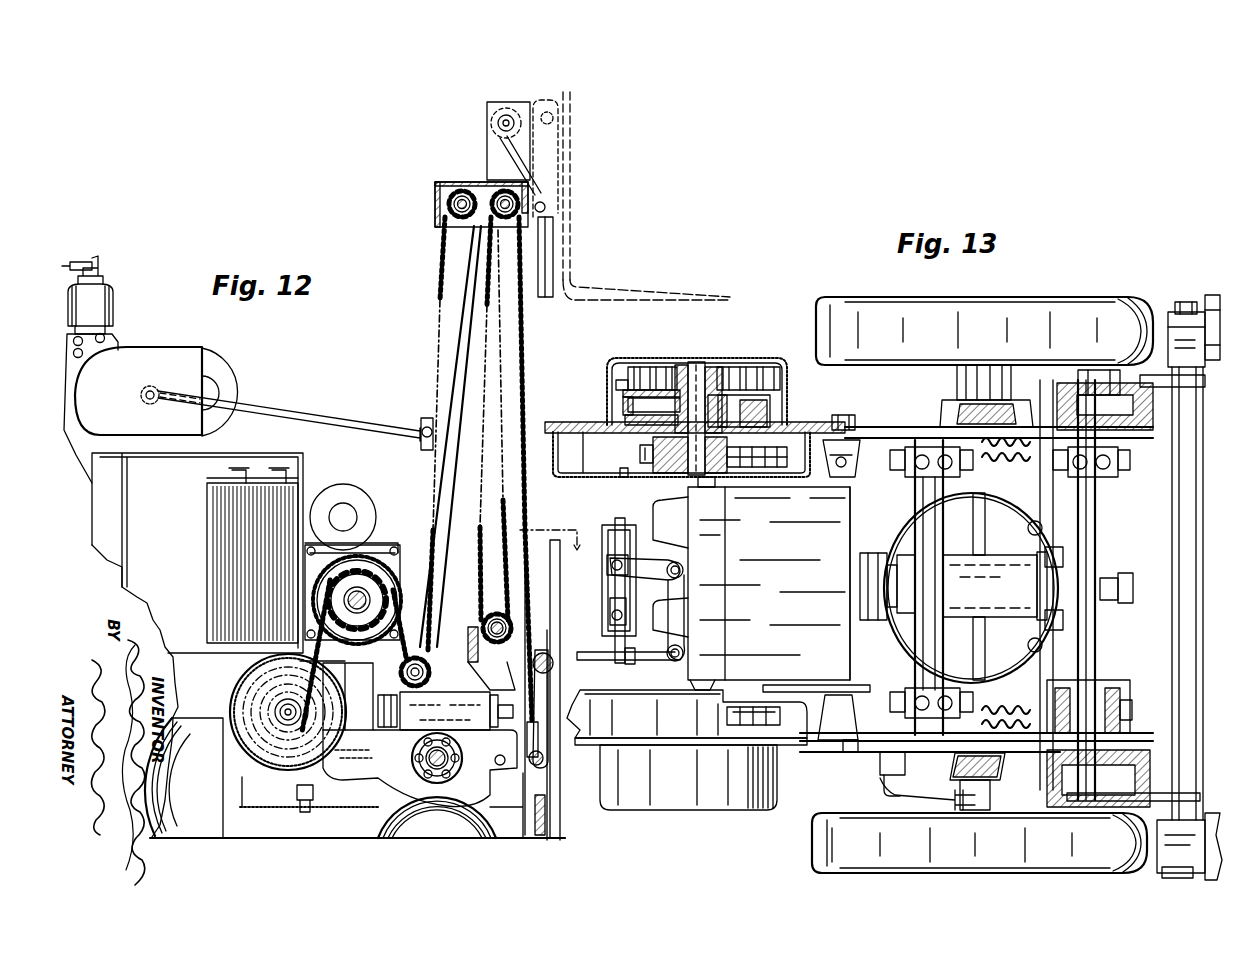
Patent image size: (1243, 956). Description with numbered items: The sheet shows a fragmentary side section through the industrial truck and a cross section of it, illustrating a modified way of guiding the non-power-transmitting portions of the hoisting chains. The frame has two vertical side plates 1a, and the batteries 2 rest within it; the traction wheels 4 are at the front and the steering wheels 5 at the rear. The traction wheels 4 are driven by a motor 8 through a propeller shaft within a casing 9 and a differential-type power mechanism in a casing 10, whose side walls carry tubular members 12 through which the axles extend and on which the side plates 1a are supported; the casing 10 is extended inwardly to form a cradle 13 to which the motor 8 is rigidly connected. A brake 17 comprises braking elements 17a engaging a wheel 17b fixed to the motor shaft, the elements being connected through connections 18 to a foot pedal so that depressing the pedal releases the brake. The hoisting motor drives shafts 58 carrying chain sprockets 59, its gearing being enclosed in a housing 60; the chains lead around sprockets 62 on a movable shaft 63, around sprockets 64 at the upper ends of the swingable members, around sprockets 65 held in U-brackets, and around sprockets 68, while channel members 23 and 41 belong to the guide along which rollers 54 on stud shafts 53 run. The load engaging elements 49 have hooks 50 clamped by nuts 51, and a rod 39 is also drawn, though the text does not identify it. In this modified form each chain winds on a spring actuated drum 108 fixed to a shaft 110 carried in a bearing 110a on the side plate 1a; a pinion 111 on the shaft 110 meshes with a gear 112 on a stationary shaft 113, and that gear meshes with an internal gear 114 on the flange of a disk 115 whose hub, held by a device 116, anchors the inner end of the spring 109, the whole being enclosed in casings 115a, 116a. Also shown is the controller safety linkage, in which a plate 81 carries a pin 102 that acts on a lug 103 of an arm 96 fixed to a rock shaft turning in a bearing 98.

In FIG. 13, the side plates 1a is at (872, 432).
In FIG. 12, the batteries 2 is at (209, 627).
In FIG. 12, the traction wheels 4 is at (380, 826).
In FIG. 13, the traction wheels 4 is at (888, 300).
In FIG. 12, the steering wheels 5 is at (191, 820).
In FIG. 13, the motor 8 is at (761, 589).
In FIG. 13, the casing 9 is at (996, 588).
In FIG. 13, the casing 10 is at (971, 588).
In FIG. 13, the tubular members 12 is at (957, 376).
In FIG. 12, the cradle 13 is at (258, 712).
In FIG. 13, the cradle 13 is at (551, 548).
In FIG. 13, the brake 17 is at (626, 521).
In FIG. 13, the braking elements 17a is at (608, 613).
In FIG. 13, the wheel 17b is at (607, 586).
In FIG. 13, the connections 18 is at (614, 665).
In FIG. 13, the channel members 23 is at (1120, 456).
In FIG. 12, the tilt rod 39 is at (312, 410).
In FIG. 13, the channel members 41 is at (1125, 471).
In FIG. 13, the load engaging elements 49 is at (1212, 299).
In FIG. 13, the hook 50 is at (1168, 319).
In FIG. 13, the nuts 51 is at (1184, 302).
In FIG. 13, the stud shafts 53 is at (1100, 370).
In FIG. 13, the rollers 54 is at (1058, 387).
In FIG. 12, the shaft sections 58 is at (371, 600).
In FIG. 12, the chain sprockets 59 is at (368, 627).
In FIG. 12, the housing 60 is at (395, 584).
In FIG. 12, the sprockets 62 is at (433, 652).
In FIG. 13, the sprockets 62 is at (945, 688).
In FIG. 13, the shaft 63 is at (955, 556).
In FIG. 12, the sprockets 64 is at (452, 226).
In FIG. 12, the sprockets 65 is at (500, 613).
In FIG. 13, the sprockets 65 is at (1118, 479).
In FIG. 12, the sprockets 68 is at (507, 226).
In FIG. 13, the plate 81 is at (872, 443).
In FIG. 13, the arm 96 is at (910, 801).
In FIG. 13, the bearing 98 is at (856, 766).
In FIG. 13, the pin 102 is at (886, 761).
In FIG. 13, the lug 103 is at (896, 779).
In FIG. 12, the spring actuated drum 108 is at (286, 738).
In FIG. 13, the spring actuated drum 108 is at (653, 445).
In FIG. 13, the spring 109 is at (746, 368).
In FIG. 13, the shaft 110 is at (697, 362).
In FIG. 13, the bearing 110a is at (736, 450).
In FIG. 13, the pinion 111 is at (628, 406).
In FIG. 13, the gear 112 is at (768, 418).
In FIG. 13, the stationary shaft 113 is at (770, 400).
In FIG. 13, the internal gear 114 is at (623, 394).
In FIG. 13, the disk 115 is at (620, 381).
In FIG. 13, the casing 115a is at (681, 454).
In FIG. 13, the device 116 is at (673, 358).
In FIG. 13, the casing 116a is at (625, 358).